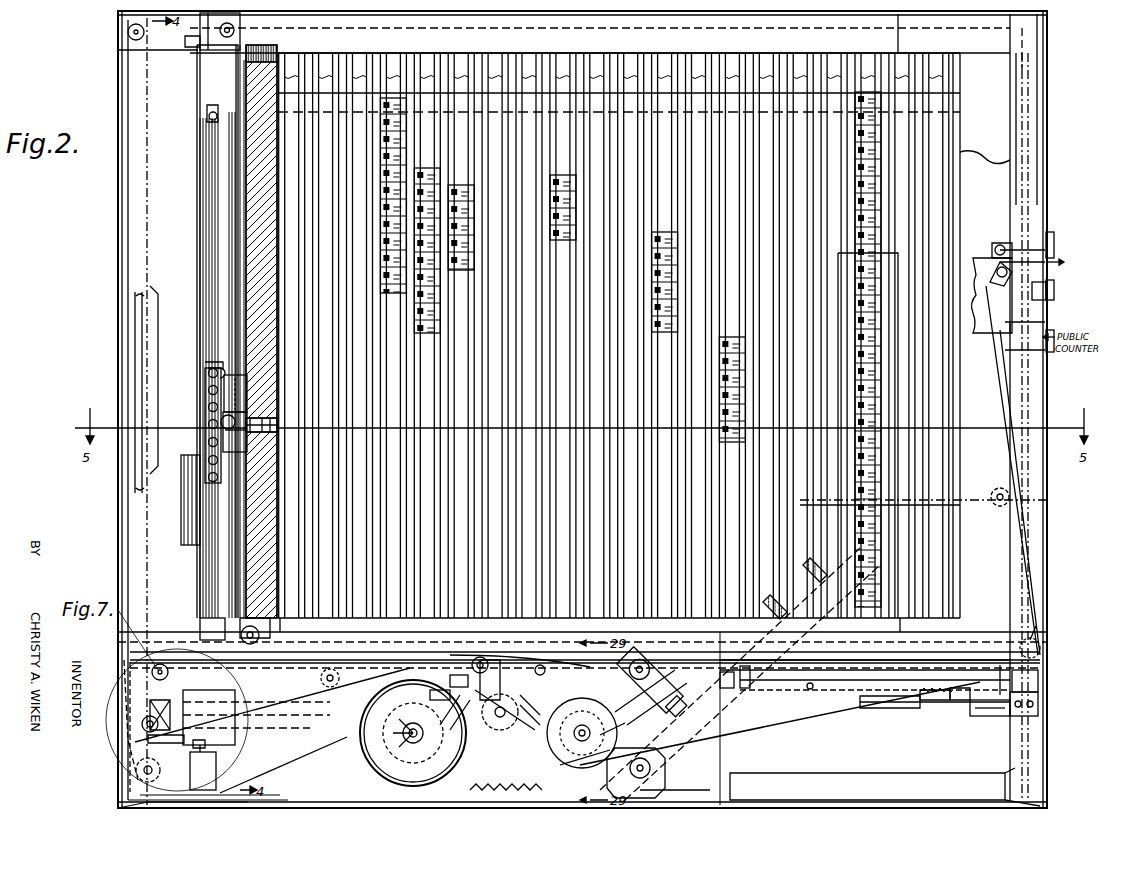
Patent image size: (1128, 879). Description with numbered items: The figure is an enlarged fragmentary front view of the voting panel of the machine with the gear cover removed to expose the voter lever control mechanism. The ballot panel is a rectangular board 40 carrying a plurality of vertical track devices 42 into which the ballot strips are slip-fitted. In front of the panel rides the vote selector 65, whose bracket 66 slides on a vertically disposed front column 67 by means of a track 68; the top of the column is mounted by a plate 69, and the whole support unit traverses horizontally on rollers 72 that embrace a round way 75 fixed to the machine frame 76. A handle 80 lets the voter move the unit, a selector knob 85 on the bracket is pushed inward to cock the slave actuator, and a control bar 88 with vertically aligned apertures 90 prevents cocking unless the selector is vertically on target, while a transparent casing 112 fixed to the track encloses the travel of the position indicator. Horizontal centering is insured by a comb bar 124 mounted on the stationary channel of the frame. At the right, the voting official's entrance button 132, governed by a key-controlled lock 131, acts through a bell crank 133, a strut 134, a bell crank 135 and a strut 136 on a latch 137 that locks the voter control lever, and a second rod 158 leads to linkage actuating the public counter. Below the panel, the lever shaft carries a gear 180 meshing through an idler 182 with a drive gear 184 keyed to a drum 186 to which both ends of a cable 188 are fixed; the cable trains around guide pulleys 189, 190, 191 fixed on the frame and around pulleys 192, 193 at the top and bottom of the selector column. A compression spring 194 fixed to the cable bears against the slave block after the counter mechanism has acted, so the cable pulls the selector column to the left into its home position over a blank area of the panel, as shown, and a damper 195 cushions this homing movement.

The rectangular board 40 is at (578, 80).
The vertical track devices 42 is at (520, 56).
The vote selector 65 is at (194, 395).
The bracket 66 is at (228, 388).
The front column 67 is at (206, 292).
The track 68 is at (228, 468).
The plate 69 is at (262, 46).
The rollers 72 is at (166, 674).
The round way 75 is at (956, 690).
The machine frame 76 is at (880, 692).
The handle 80 is at (222, 431).
The selector knob 85 is at (222, 423).
The control bar 88 is at (214, 372).
The apertures 90 is at (212, 368).
The casing 112 is at (270, 290).
The comb bar 124 is at (850, 665).
The key-controlled lock 131 is at (1052, 298).
The entrance button 132 is at (1050, 242).
The bell crank 133 is at (1000, 252).
The strut 134 is at (1000, 340).
The bell crank 135 is at (1040, 694).
The strut 136 is at (1000, 718).
The latch 137 is at (540, 634).
The second rod 158 is at (1006, 716).
The gear 180 is at (600, 782).
The idler 182 is at (522, 776).
The drive gear 184 is at (362, 756).
The drum 186 is at (372, 790).
The cable 188 is at (122, 90).
The guide pulley 189 is at (120, 777).
The guide pulley 190 is at (128, 34).
The guide pulley 191 is at (1040, 650).
The pulley 192 is at (236, 26).
The pulley 193 is at (206, 627).
The compression spring 194 is at (938, 690).
The damper 195 is at (268, 720).